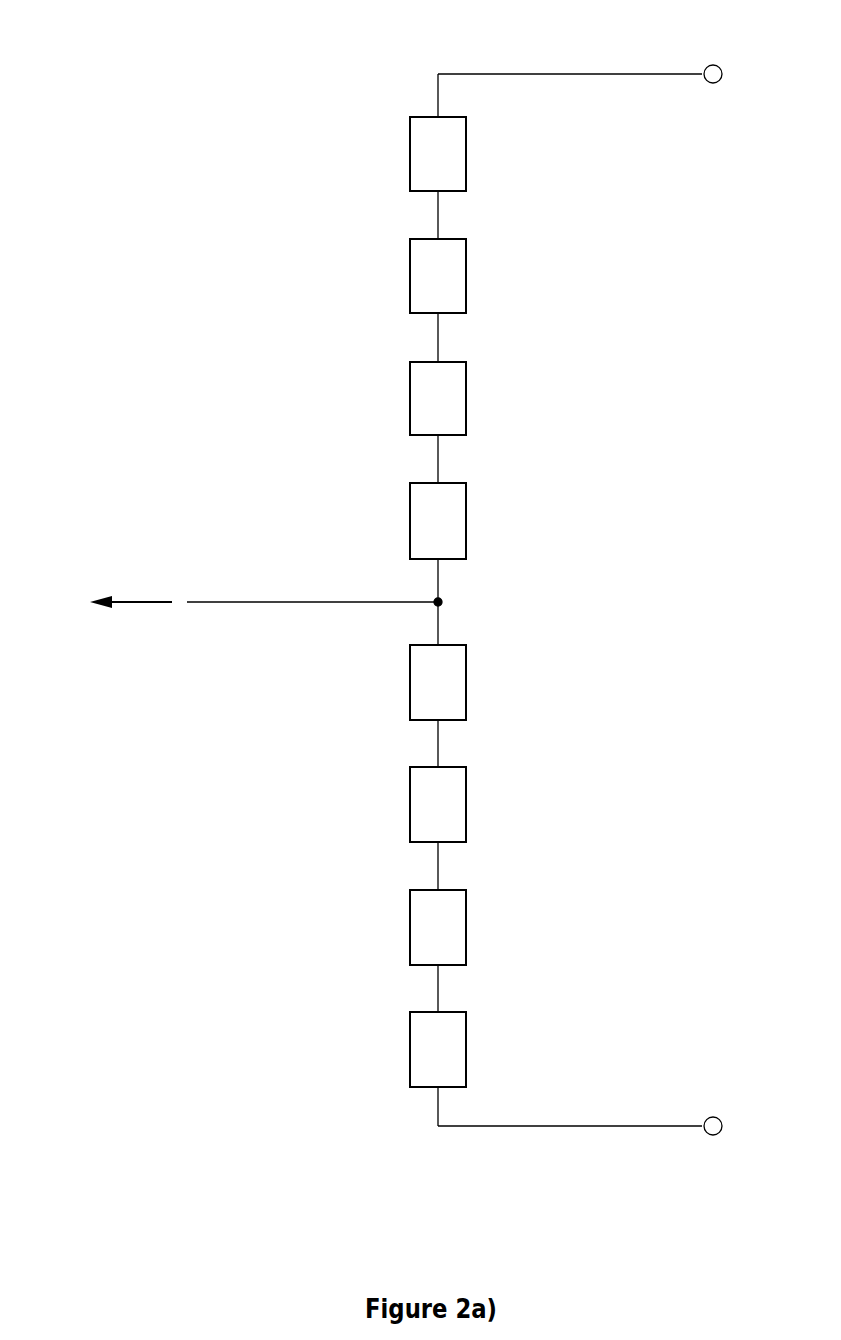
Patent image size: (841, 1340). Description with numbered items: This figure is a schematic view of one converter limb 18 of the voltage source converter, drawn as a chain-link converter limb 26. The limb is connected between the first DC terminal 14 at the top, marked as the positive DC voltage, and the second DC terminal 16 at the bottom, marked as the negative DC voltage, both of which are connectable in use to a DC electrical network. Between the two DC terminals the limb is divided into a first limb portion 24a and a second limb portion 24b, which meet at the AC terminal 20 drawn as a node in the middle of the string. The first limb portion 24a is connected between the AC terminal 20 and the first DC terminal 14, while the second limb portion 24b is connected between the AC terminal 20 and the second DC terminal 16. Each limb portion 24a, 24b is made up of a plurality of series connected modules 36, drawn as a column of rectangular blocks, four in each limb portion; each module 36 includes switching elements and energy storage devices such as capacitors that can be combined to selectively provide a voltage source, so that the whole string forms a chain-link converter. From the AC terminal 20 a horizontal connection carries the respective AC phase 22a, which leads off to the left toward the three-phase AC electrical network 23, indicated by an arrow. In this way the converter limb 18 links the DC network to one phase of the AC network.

The first DC terminal 14 is at (553, 80).
The second DC terminal 16 is at (562, 1128).
The converter limb 18 is at (415, 598).
The chain-link converter limb 26 is at (272, 208).
The AC terminal 20 is at (447, 600).
The AC phase 22a is at (242, 602).
The three-phase AC electrical network 23 is at (109, 608).
The first limb portion 24a is at (675, 370).
The second limb portion 24b is at (673, 820).
The module 36 is at (443, 159).